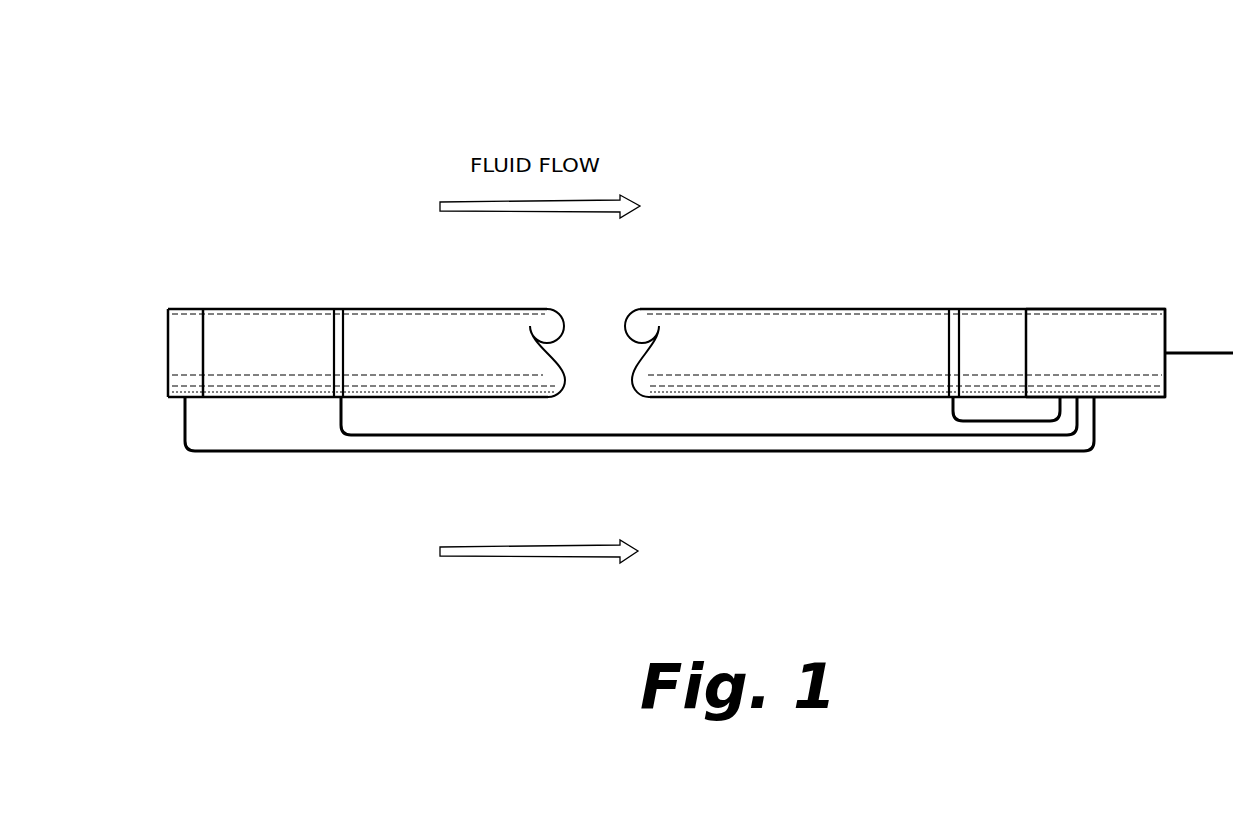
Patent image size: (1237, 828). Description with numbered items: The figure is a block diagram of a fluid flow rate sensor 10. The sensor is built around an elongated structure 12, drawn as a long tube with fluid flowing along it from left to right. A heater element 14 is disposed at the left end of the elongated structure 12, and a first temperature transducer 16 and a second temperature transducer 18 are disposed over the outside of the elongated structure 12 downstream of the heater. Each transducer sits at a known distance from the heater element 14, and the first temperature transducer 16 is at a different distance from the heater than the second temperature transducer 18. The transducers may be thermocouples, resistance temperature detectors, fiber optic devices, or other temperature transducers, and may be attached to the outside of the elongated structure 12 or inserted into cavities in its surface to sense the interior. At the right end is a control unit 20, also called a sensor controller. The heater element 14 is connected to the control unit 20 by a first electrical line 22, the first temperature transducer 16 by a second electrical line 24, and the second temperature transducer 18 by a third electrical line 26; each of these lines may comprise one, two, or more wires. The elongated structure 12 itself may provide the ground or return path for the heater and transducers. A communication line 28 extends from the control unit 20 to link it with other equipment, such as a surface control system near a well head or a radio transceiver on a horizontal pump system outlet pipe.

The fluid flow rate sensor 10 is at (902, 100).
The elongated structure 12 is at (798, 308).
The heater element 14 is at (185, 308).
The first temperature transducer 16 is at (342, 308).
The second temperature transducer 18 is at (955, 308).
The control unit 20 is at (1105, 308).
The first electrical line 22 is at (756, 452).
The second electrical line 24 is at (862, 436).
The third electrical line 26 is at (1017, 422).
The communication line 28 is at (1205, 355).